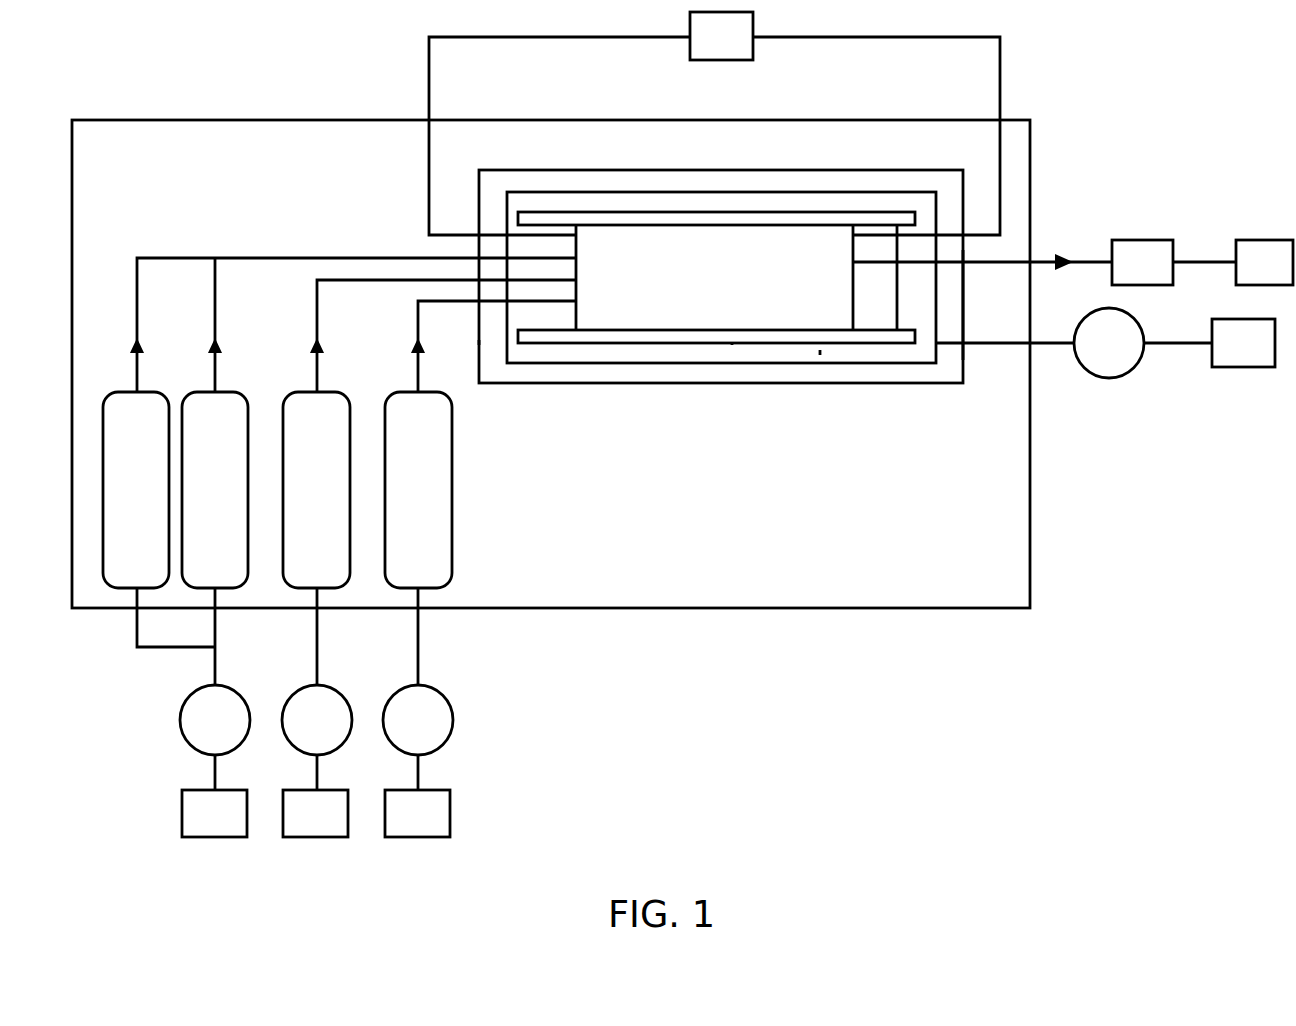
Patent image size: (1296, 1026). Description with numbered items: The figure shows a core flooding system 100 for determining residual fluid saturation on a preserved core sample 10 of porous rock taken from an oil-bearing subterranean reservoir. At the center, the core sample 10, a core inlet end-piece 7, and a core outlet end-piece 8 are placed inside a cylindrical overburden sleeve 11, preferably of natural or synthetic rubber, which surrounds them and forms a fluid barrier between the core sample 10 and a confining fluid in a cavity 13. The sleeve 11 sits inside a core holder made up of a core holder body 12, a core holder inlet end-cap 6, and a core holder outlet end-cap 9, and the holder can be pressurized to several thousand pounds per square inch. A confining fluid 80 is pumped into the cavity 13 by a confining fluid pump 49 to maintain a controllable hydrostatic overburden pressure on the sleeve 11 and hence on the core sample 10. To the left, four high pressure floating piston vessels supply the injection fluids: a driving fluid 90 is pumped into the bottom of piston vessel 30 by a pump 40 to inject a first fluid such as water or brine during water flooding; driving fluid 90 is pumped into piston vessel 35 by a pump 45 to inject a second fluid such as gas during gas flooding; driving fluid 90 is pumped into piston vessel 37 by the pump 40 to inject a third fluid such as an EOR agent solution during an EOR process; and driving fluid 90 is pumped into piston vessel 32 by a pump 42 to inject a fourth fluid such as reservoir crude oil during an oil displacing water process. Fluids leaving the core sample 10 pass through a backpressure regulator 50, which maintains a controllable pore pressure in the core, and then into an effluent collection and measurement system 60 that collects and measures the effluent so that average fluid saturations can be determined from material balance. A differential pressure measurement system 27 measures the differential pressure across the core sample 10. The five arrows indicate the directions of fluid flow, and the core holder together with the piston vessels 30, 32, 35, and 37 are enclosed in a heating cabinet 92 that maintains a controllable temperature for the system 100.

The core flooding system 100 is at (933, 645).
The heating cabinet 92 is at (1030, 510).
The differential pressure measurement system 27 is at (738, 51).
The core holder body 12 is at (687, 170).
The core holder outlet end-cap 9 is at (967, 305).
The core inlet end-piece 7 is at (510, 330).
The core sample 10 is at (693, 290).
The core outlet end-piece 8 is at (866, 316).
The core holder inlet end-cap 6 is at (479, 340).
The overburden sleeve 11 is at (732, 343).
The cavity 13 is at (820, 355).
The backpressure regulator 50 is at (1159, 277).
The effluent collection and measurement system 60 is at (1282, 277).
The confining fluid pump 49 is at (1126, 358).
The confining fluid 80 is at (1260, 358).
The high pressure floating piston vessel 37 is at (153, 483).
The high pressure floating piston vessel 30 is at (232, 483).
The high pressure floating piston vessel 32 is at (333, 483).
The high pressure floating piston vessel 35 is at (435, 483).
The pump 40 is at (232, 735).
The pump 42 is at (334, 735).
The pump 45 is at (435, 735).
The driving fluid 90 is at (232, 828).